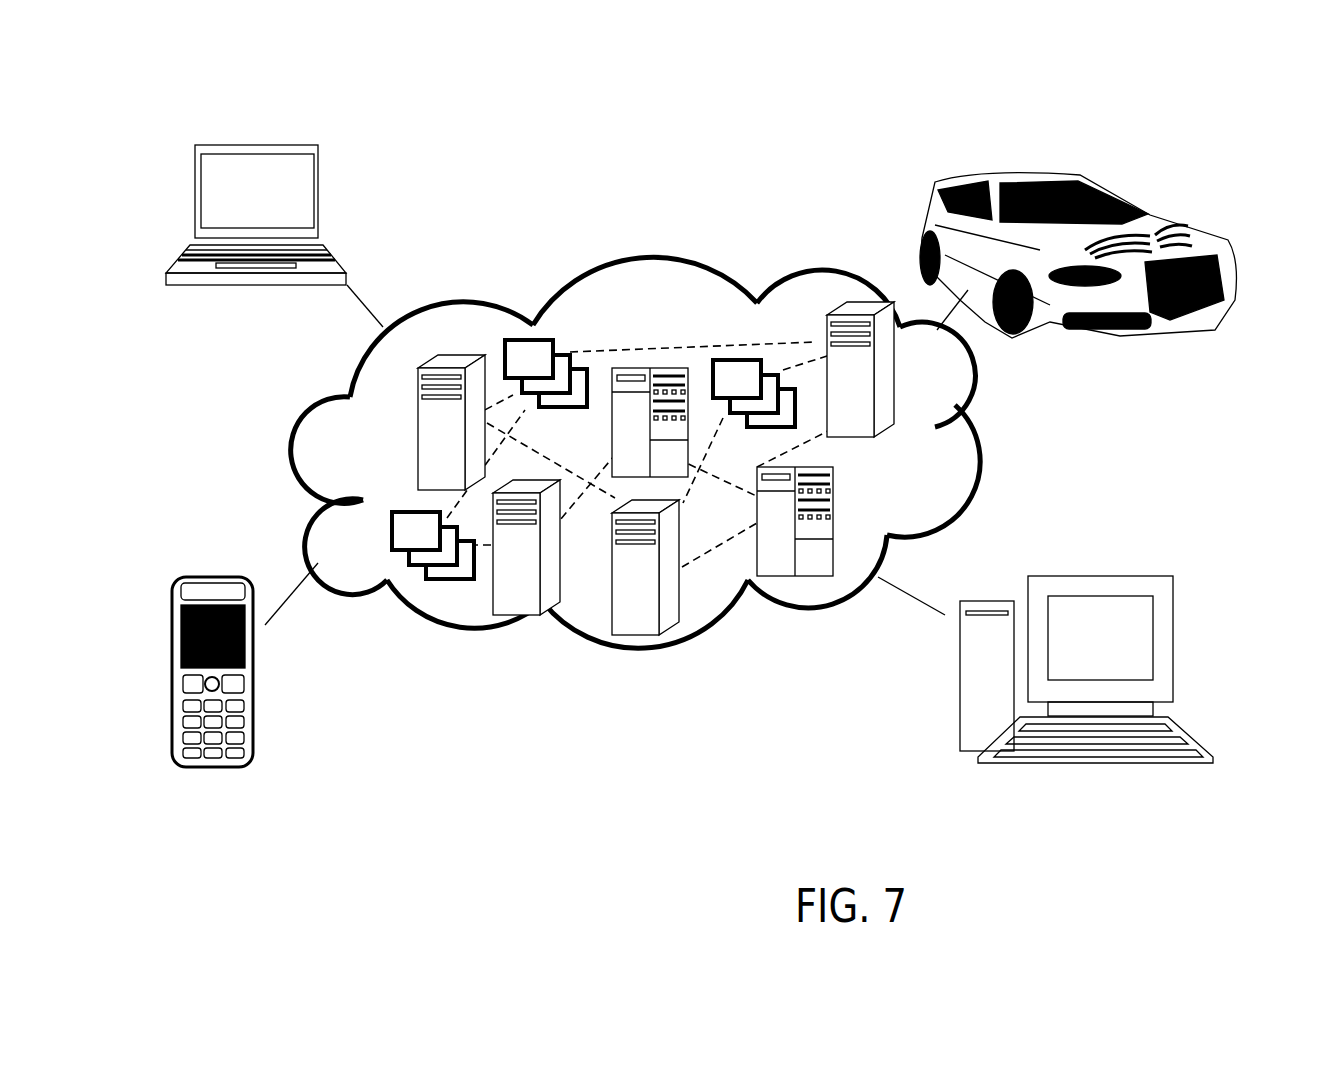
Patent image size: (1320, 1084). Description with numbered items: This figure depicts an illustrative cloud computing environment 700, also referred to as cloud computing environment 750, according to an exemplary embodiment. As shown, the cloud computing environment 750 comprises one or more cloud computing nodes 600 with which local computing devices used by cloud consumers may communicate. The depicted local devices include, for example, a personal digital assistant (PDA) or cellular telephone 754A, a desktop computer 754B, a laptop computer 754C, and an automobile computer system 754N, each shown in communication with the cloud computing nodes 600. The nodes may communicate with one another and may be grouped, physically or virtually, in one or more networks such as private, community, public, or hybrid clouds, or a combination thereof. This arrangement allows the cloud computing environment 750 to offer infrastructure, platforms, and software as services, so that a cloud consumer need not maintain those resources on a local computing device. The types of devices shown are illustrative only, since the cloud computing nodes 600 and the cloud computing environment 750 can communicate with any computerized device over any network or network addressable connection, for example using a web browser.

The cloud computing environment 700 is at (1102, 107).
The cloud computing environment 750 is at (987, 442).
The cloud computing nodes 600 is at (903, 458).
The personal digital assistant (PDA) or cellular telephone 754A is at (265, 692).
The desktop computer 754B is at (983, 673).
The laptop computer 754C is at (333, 223).
The automobile computer system 754N is at (915, 208).